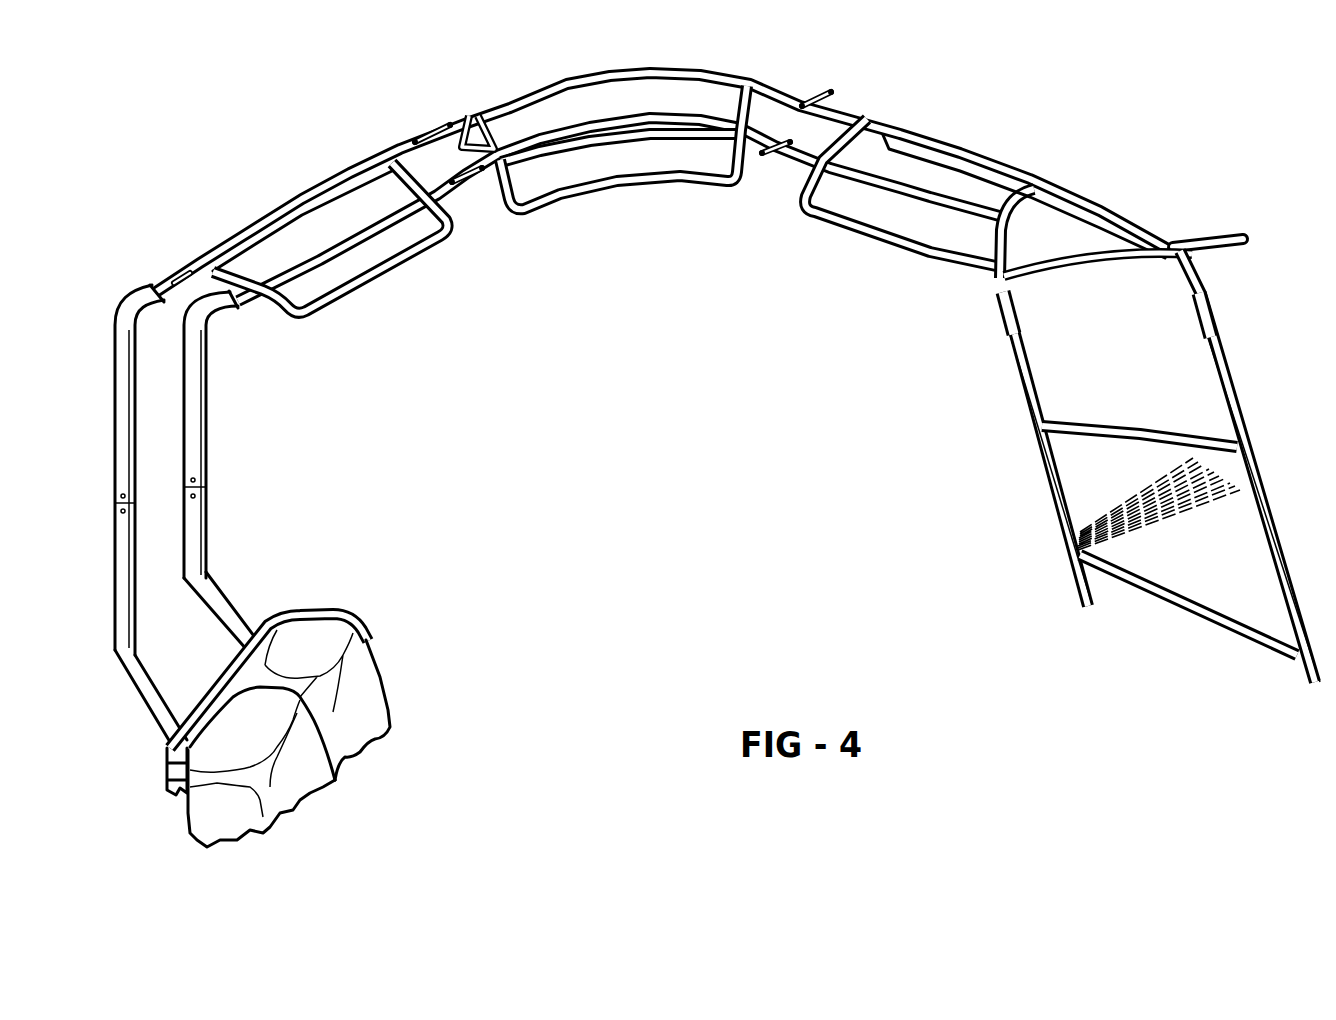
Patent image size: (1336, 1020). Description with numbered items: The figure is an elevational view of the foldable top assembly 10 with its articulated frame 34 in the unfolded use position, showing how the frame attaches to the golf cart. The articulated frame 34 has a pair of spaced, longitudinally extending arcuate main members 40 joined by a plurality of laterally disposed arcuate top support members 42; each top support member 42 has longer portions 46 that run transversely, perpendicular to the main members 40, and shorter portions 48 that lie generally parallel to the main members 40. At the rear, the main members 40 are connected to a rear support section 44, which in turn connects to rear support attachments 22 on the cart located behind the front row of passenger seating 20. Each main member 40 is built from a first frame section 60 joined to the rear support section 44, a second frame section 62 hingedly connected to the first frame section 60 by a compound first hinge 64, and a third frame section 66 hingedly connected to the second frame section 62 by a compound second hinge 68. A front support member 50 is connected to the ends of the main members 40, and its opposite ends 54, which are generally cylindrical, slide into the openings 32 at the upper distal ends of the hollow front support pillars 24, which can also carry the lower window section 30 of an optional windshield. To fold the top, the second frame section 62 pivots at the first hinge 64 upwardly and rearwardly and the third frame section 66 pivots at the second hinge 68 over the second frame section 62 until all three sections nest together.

The foldable top assembly 10 is at (698, 56).
The row of passenger seating 20 is at (354, 619).
The rear support attachments 22 is at (224, 586).
The front support pillars 24 is at (1014, 368).
The lower window section 30 is at (1176, 561).
The opening 32 is at (997, 300).
The articulated frame 34 is at (575, 75).
The longitudinally extending arcuate main members 40 is at (982, 165).
The arcuate top support members 42 is at (300, 317).
The rear support section 44 is at (207, 440).
The longer portions 46 is at (398, 182).
The shorter portions 48 is at (316, 238).
The front support member 50 is at (1214, 232).
The opposite ends 54 is at (1012, 286).
The first frame section 60 is at (380, 253).
The second frame section 62 is at (661, 137).
The compound first hinge 64 is at (428, 126).
The third frame section 66 is at (918, 208).
The compound second hinge 68 is at (815, 91).